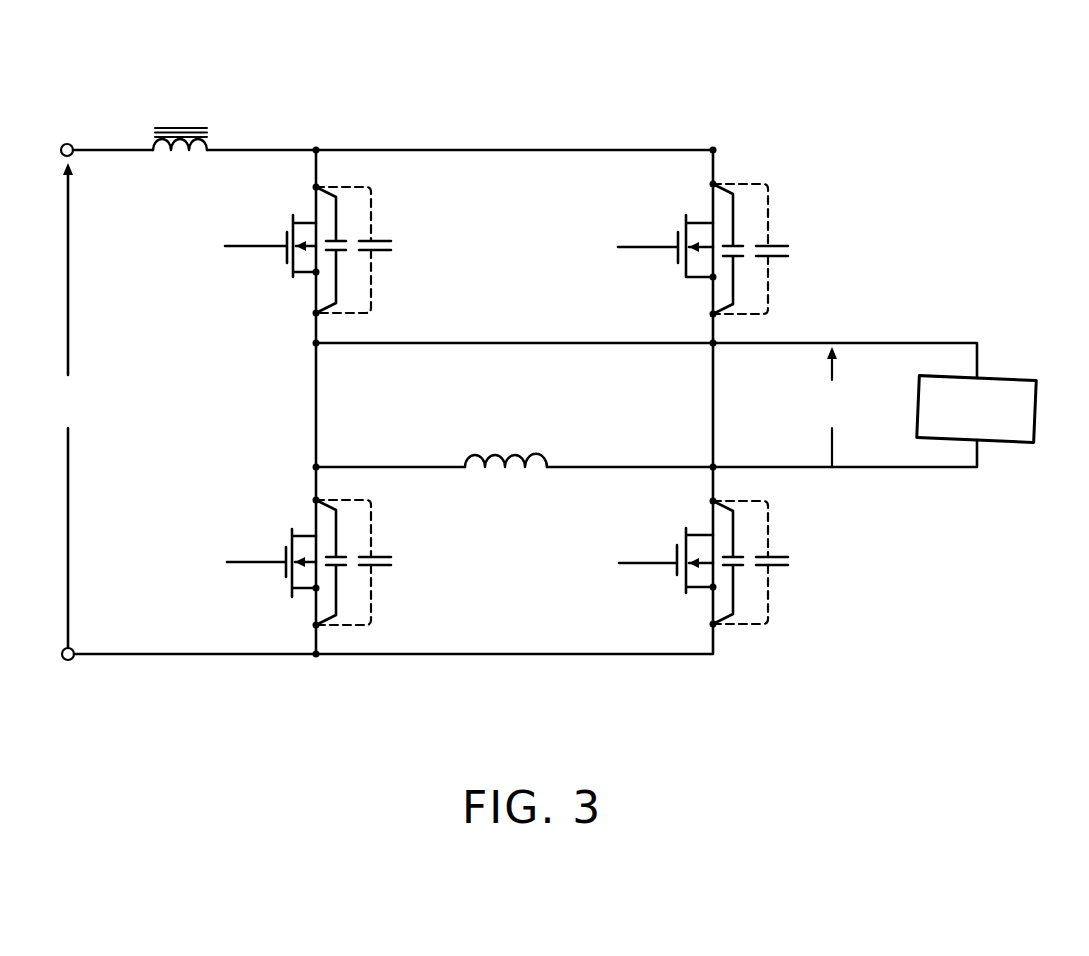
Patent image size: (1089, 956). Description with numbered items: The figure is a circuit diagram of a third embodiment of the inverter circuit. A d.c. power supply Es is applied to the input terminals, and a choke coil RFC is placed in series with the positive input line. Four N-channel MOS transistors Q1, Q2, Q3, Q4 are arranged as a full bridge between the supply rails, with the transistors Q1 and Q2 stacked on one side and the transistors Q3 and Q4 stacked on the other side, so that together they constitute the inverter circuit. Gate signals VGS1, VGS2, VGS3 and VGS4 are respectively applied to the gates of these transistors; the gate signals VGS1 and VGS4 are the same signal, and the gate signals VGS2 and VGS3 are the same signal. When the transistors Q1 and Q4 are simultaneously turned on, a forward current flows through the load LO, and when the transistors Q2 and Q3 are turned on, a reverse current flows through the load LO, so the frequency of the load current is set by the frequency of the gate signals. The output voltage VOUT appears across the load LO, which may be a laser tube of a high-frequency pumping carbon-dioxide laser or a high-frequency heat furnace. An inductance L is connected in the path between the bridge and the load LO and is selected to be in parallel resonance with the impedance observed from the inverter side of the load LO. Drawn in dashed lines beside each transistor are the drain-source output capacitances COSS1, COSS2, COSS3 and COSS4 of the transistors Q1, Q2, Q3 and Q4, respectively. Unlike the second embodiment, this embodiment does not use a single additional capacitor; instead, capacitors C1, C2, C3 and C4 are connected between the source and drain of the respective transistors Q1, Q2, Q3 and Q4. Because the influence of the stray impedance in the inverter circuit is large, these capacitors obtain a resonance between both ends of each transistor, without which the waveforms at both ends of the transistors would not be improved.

The choke coil RFC is at (175, 126).
The d.c. power supply Es is at (78, 400).
The N-channel MOS transistor Q1 is at (300, 284).
The N-channel MOS transistor Q2 is at (285, 556).
The N-channel MOS transistor Q3 is at (705, 281).
The N-channel MOS transistor Q4 is at (676, 551).
The capacitor C1 is at (341, 250).
The capacitor C2 is at (342, 562).
The capacitor C3 is at (740, 249).
The capacitor C4 is at (740, 562).
The drain-source output capacitance COSS1 is at (378, 232).
The drain-source output capacitance COSS2 is at (380, 554).
The drain-source output capacitance COSS3 is at (777, 237).
The drain-source output capacitance COSS4 is at (778, 567).
The gate signal VGS1 is at (180, 252).
The gate signal VGS2 is at (180, 567).
The gate signal VGS3 is at (573, 253).
The gate signal VGS4 is at (577, 567).
The inductance L is at (506, 479).
The output voltage VOUT is at (841, 407).
The load LO is at (1022, 378).